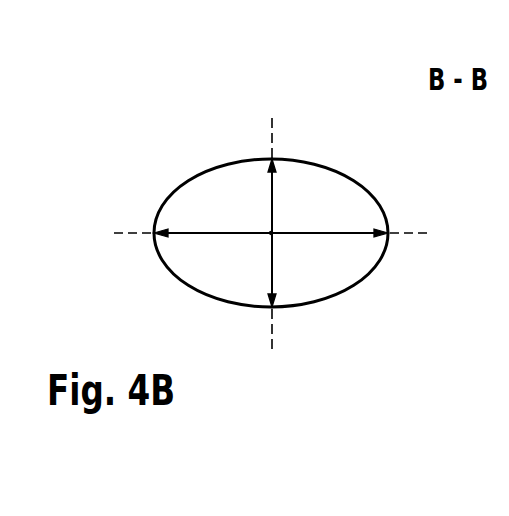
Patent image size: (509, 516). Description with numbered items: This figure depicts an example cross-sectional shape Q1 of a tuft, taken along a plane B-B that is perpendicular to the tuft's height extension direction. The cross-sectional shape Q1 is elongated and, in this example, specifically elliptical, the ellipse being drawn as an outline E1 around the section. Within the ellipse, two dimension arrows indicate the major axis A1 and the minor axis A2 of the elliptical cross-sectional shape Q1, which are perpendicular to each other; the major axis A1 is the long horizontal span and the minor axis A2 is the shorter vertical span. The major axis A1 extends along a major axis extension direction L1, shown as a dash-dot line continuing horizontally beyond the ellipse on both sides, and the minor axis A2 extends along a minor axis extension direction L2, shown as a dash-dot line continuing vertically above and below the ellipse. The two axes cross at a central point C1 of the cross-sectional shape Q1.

The cross-sectional shape Q1 is at (261, 223).
The elliptical boundary of the cross-section E1 is at (330, 298).
The major axis extension direction L1 is at (135, 233).
The minor axis extension direction L2 is at (273, 140).
The major axis A1 is at (340, 236).
The minor axis A2 is at (272, 273).
The center of the cross-section C1 is at (270, 236).